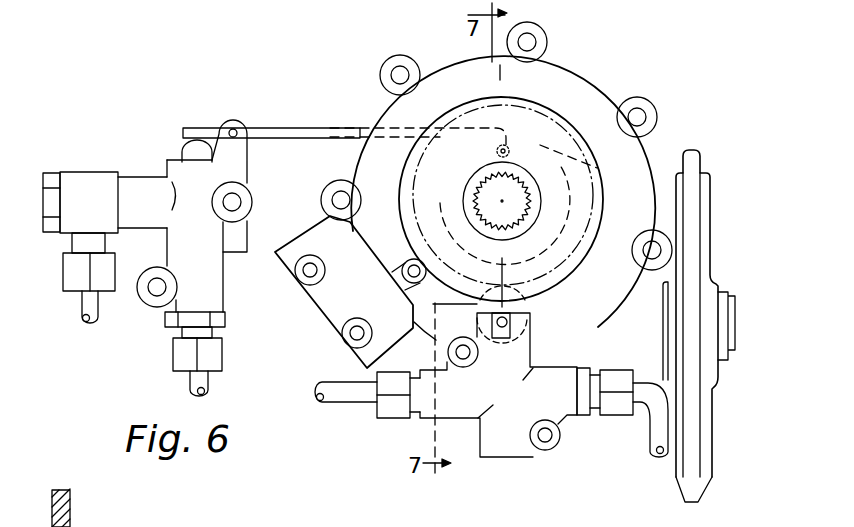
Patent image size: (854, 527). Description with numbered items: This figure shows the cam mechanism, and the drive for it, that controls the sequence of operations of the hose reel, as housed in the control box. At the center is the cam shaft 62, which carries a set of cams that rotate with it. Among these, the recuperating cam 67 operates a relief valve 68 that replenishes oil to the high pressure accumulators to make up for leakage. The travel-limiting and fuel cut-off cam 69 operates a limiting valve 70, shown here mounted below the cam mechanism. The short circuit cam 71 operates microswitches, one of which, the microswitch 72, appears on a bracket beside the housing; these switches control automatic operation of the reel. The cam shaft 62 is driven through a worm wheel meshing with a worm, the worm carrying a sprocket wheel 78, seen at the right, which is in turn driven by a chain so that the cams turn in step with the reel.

The cam shaft 62 is at (512, 185).
The recuperating cam 67 is at (592, 163).
The relief valve 68 is at (203, 258).
The travel-limiting and fuel cut-off cam 69 is at (576, 281).
The limiting valve 70 is at (520, 357).
The short circuit cam 71 is at (582, 257).
The microswitch 72 is at (332, 308).
The sprocket wheel 78 is at (694, 205).